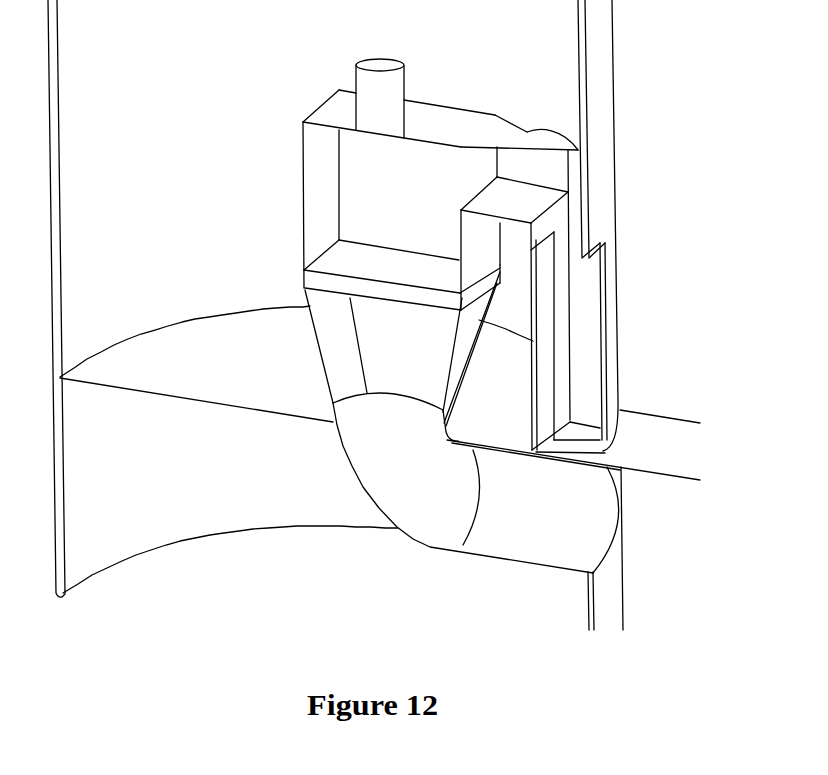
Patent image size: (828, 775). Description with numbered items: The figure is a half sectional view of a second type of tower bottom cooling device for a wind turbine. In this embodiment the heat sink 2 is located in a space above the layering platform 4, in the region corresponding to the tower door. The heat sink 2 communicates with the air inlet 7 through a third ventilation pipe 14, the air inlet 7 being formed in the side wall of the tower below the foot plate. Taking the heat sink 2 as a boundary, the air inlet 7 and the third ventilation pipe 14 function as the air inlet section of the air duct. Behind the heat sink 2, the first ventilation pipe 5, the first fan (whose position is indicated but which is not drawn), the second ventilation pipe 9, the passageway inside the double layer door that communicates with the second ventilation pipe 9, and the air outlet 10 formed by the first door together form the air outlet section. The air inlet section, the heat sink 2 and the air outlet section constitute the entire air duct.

The heat sink 2 is at (345, 252).
The layering platform 4 is at (374, 298).
The first ventilation pipe 5 is at (342, 176).
The air inlet 7 is at (638, 548).
The second ventilation pipe 9 is at (577, 98).
The air outlet 10 is at (576, 300).
The third ventilation pipe 14 is at (449, 449).